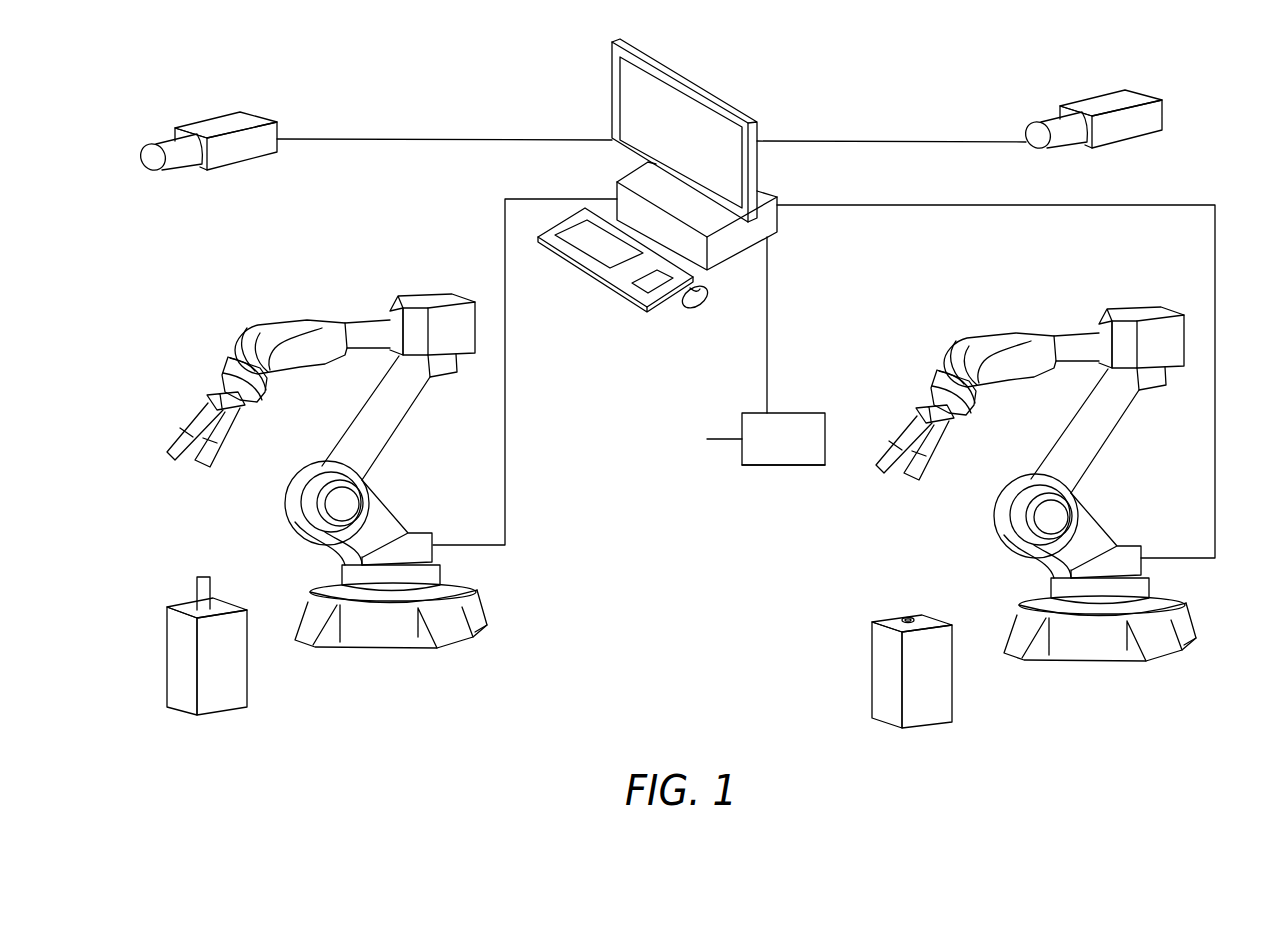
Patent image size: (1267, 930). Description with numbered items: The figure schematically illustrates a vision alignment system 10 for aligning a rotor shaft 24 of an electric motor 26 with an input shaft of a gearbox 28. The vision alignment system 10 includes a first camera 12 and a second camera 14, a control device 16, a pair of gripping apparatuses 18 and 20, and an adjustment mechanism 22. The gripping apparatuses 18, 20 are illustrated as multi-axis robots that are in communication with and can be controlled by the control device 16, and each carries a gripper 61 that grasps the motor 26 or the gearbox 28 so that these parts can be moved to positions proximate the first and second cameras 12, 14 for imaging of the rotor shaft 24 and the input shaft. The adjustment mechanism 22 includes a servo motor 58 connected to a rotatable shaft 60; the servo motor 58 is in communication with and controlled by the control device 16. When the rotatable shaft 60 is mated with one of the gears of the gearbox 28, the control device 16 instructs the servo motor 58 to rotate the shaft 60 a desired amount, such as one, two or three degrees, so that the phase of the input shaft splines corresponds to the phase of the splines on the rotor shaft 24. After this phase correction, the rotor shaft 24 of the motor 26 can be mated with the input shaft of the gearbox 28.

The vision alignment system 10 is at (126, 70).
The first camera 12 is at (240, 160).
The second camera 14 is at (1128, 138).
The control device 16 is at (742, 250).
The gripping apparatus 18 is at (300, 471).
The gripping apparatus 20 is at (903, 423).
The adjustment mechanism 22 is at (803, 449).
The rotor shaft 24 is at (193, 587).
The electric motor 26 is at (166, 626).
The gearbox 28 is at (952, 693).
The servo motor 58 is at (783, 467).
The rotatable shaft 60 is at (722, 439).
The gripper 61 is at (197, 417).